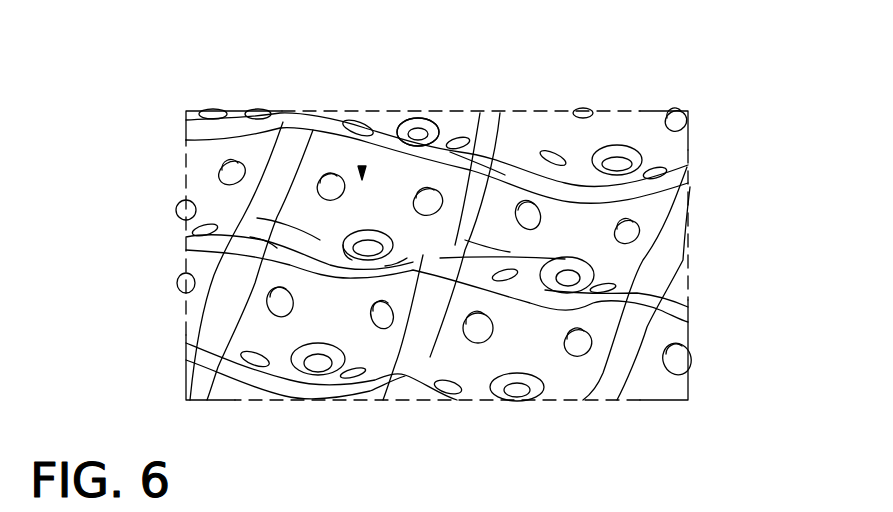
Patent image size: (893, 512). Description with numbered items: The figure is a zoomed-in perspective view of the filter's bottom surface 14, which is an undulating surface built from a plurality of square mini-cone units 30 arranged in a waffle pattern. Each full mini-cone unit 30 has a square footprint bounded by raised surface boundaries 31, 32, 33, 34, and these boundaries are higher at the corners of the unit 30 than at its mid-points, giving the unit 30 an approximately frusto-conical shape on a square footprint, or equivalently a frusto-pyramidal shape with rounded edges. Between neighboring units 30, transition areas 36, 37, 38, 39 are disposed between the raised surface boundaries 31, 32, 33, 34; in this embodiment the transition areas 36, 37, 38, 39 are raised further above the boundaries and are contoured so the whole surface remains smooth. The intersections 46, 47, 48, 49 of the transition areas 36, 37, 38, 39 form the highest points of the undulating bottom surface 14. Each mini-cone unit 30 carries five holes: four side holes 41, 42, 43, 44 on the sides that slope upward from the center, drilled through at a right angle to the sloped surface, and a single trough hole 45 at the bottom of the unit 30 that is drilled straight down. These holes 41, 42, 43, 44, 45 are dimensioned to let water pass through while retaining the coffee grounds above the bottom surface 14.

The bottom surface 14 is at (658, 401).
The mini-cone unit 30 is at (362, 172).
The raised surface boundary 31 is at (418, 170).
The raised surface boundary 32 is at (470, 210).
The raised surface boundary 33 is at (378, 263).
The raised surface boundary 34 is at (293, 201).
The transition area 36 is at (450, 150).
The transition area 37 is at (465, 237).
The transition area 38 is at (397, 268).
The transition area 39 is at (257, 217).
The side hole 41 is at (427, 195).
The side hole 42 is at (407, 258).
The side hole 43 is at (295, 242).
The side hole 44 is at (327, 176).
The trough hole 45 is at (343, 245).
The intersection of transition areas 46 is at (292, 126).
The intersection of transition areas 47 is at (490, 157).
The intersection of transition areas 48 is at (437, 268).
The intersection of transition areas 49 is at (250, 237).